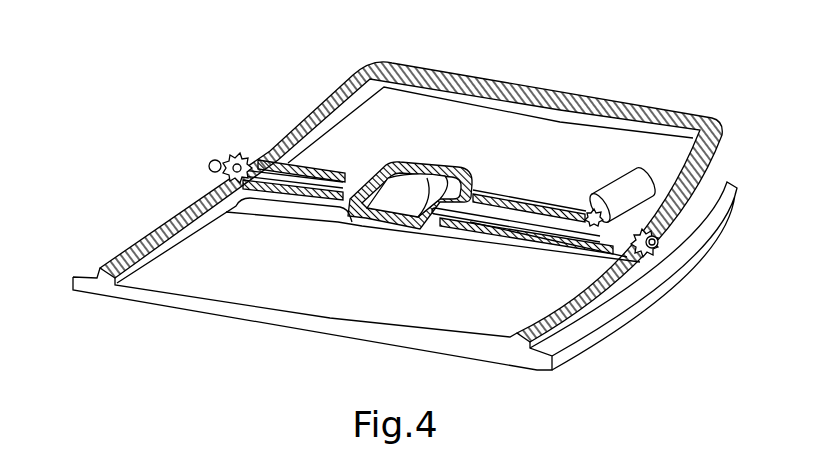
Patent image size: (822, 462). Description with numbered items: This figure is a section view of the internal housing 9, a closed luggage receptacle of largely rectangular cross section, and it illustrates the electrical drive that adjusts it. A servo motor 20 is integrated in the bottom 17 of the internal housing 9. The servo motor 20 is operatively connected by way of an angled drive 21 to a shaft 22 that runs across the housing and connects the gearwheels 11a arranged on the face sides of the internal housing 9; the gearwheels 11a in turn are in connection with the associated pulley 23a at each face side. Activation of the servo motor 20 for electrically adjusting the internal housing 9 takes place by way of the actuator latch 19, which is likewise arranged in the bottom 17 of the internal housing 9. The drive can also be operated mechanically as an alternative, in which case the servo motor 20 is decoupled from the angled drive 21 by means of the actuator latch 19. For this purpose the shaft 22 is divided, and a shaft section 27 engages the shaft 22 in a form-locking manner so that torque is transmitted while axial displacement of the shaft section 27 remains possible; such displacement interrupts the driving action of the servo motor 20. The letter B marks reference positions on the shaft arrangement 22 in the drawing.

The internal housing 9 is at (147, 222).
The gearwheels 11a is at (242, 153).
The bottom 17 is at (232, 291).
The actuator latch 19 is at (399, 182).
The servo motor 20 is at (623, 178).
The angled drive 21 is at (580, 258).
The shaft 22 is at (512, 208).
The pulley 23a is at (212, 156).
The shaft section 27 is at (630, 222).
The rack strip B is at (346, 167).